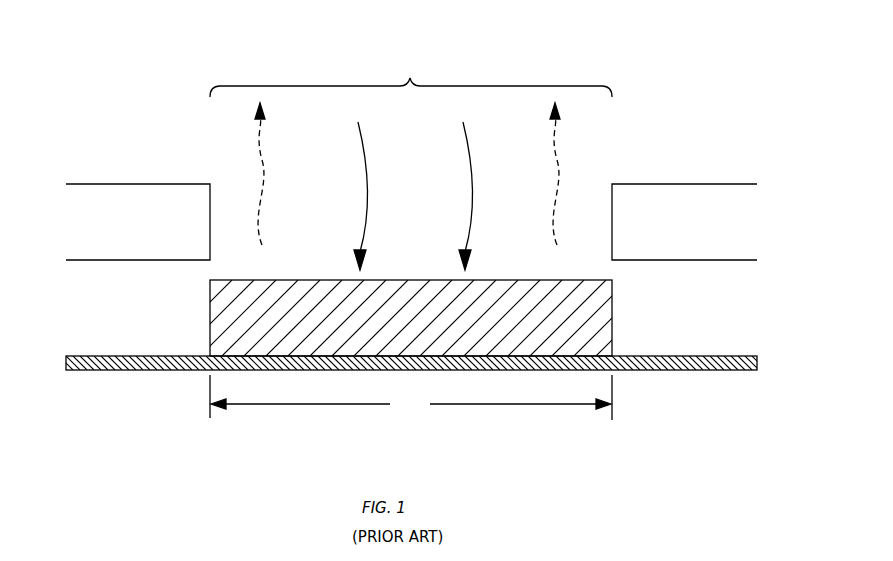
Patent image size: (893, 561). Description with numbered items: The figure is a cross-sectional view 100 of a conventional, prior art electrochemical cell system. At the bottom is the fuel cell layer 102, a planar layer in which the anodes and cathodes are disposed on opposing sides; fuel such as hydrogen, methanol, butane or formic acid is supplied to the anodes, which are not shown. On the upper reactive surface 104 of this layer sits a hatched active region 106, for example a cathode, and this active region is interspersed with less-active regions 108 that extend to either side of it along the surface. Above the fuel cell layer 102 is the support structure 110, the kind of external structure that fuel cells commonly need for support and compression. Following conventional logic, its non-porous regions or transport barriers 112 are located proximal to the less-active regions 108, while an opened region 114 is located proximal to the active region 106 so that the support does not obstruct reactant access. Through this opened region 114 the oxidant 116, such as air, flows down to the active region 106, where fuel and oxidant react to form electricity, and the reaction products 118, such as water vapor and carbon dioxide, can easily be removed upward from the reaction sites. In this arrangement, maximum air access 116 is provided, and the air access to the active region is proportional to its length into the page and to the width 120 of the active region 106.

The cross-sectional view 100 is at (704, 30).
The fuel cell layer 102 is at (776, 272).
The reactive surface 104 is at (101, 353).
The active region 106 is at (602, 338).
The less-active region 108 is at (157, 343).
The support structure 110 is at (776, 142).
The transport barrier 112 is at (126, 197).
The opened region 114 is at (411, 78).
The oxidant 116 is at (370, 195).
The reaction products 118 is at (262, 152).
The width of the active region 120 is at (411, 397).